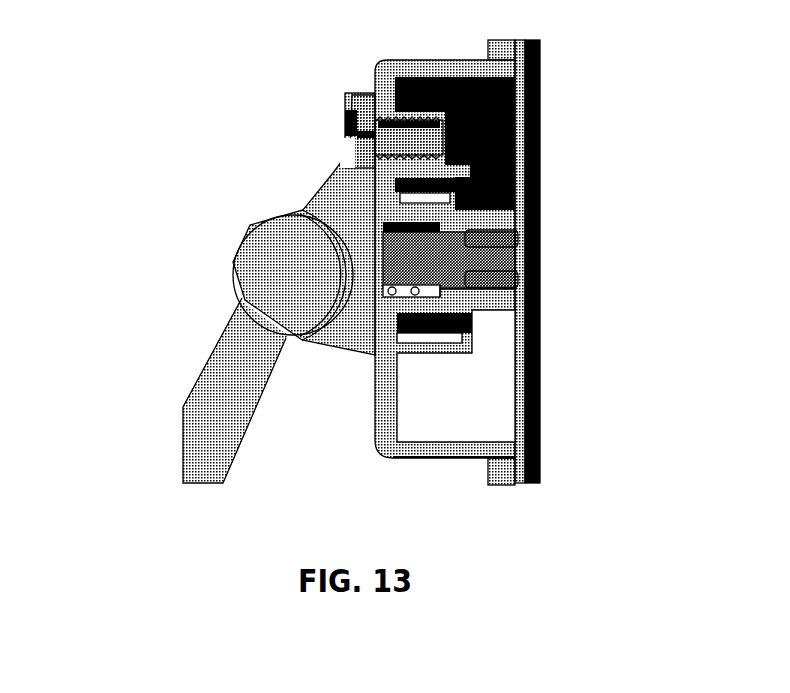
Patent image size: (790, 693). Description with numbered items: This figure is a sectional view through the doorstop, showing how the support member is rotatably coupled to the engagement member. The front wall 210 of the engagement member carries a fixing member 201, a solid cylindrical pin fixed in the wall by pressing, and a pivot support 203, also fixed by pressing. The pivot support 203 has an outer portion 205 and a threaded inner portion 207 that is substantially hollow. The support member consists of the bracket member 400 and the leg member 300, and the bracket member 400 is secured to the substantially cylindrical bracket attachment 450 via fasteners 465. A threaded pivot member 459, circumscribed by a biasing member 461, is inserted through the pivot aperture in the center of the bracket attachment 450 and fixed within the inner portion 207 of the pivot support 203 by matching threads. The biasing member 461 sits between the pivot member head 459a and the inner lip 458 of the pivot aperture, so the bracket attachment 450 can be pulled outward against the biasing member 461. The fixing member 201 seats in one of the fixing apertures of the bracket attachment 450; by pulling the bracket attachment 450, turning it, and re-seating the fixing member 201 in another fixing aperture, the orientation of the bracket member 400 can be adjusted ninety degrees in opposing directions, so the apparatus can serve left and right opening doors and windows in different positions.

The fixing member 201 is at (498, 189).
The pivot support 203 is at (532, 269).
The outer portion 205 is at (502, 298).
The threaded inner portion 207 is at (488, 243).
The front wall 210 is at (524, 392).
The leg member 300 is at (190, 363).
The bracket member 400 is at (308, 178).
The bracket attachment 450 is at (467, 470).
The inner lip 458 is at (437, 296).
The threaded pivot member 459 is at (385, 294).
The pivot member head 459a is at (388, 234).
The biasing member 461 is at (412, 294).
The fasteners 465 is at (375, 133).